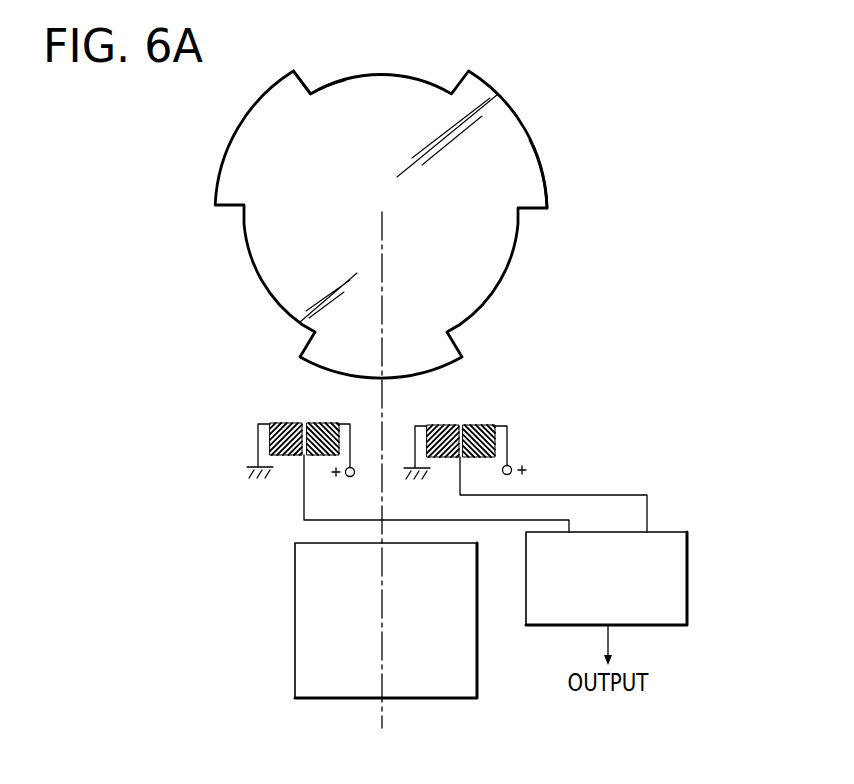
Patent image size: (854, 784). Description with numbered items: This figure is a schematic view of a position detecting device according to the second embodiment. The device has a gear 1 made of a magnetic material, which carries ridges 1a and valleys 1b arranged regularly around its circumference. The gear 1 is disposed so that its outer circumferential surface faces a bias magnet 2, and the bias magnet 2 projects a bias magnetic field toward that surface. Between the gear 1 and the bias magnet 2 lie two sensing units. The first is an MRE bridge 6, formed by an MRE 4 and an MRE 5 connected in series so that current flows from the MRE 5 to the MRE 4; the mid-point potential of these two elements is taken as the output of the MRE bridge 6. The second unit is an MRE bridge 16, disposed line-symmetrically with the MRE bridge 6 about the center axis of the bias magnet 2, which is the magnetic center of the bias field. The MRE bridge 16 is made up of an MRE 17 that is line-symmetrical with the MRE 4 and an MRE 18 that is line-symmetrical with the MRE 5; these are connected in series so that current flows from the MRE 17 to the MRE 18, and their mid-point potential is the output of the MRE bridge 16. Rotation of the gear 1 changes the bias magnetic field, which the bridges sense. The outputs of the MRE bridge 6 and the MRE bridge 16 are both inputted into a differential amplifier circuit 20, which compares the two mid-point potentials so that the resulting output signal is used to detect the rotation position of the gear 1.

The gear 1 is at (529, 121).
The ridges 1a is at (544, 173).
The valleys 1b is at (337, 81).
The bias magnet 2 is at (487, 618).
The MRE 4 is at (283, 423).
The MRE 5 is at (327, 423).
The MRE bridge 6 is at (363, 441).
The MRE bridge 16 is at (525, 441).
The MRE 17 is at (478, 425).
The MRE 18 is at (440, 425).
The differential amplifier circuit 20 is at (692, 589).